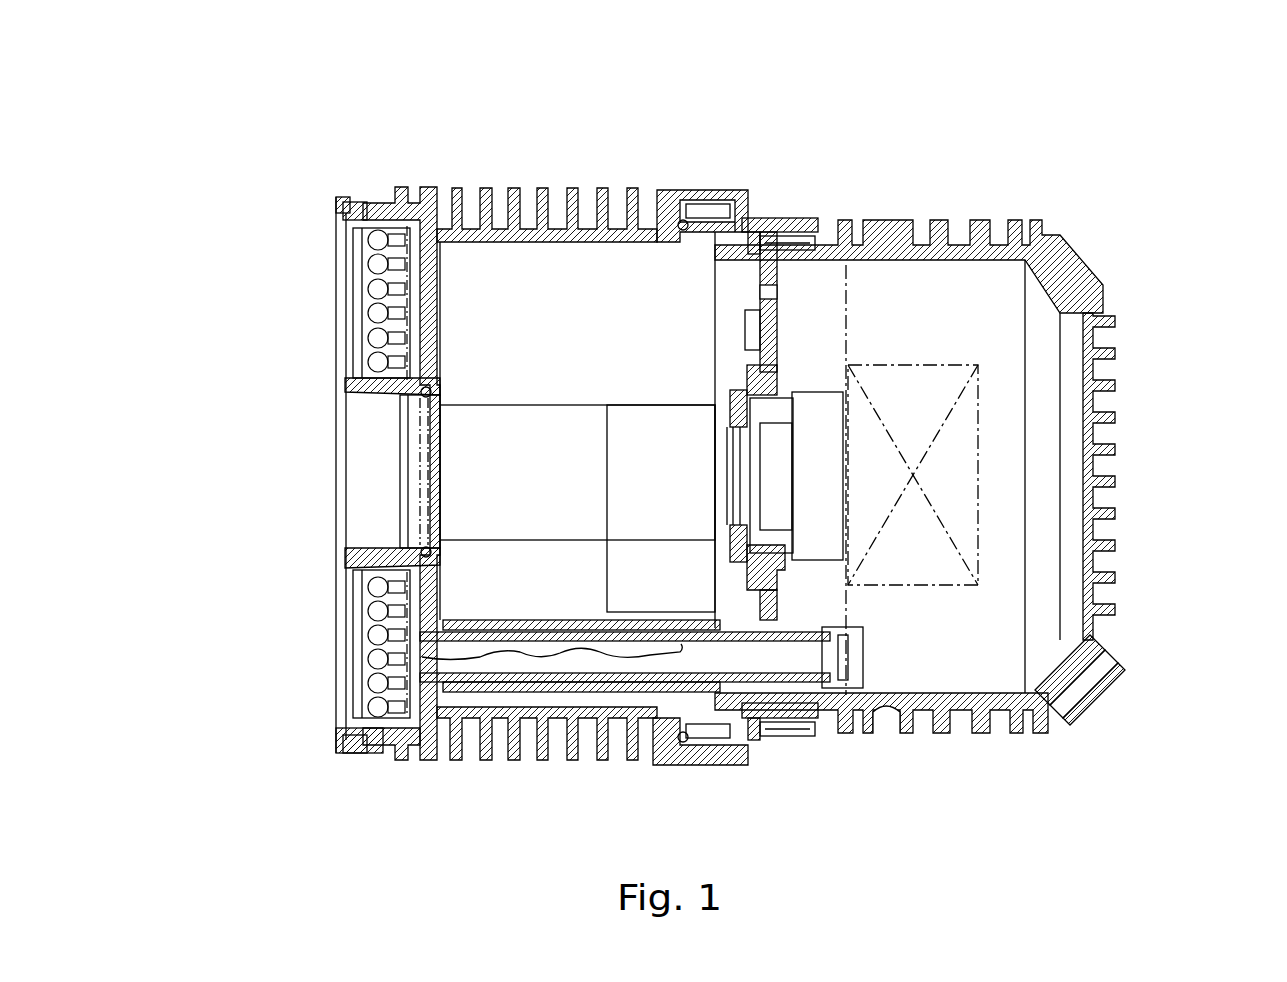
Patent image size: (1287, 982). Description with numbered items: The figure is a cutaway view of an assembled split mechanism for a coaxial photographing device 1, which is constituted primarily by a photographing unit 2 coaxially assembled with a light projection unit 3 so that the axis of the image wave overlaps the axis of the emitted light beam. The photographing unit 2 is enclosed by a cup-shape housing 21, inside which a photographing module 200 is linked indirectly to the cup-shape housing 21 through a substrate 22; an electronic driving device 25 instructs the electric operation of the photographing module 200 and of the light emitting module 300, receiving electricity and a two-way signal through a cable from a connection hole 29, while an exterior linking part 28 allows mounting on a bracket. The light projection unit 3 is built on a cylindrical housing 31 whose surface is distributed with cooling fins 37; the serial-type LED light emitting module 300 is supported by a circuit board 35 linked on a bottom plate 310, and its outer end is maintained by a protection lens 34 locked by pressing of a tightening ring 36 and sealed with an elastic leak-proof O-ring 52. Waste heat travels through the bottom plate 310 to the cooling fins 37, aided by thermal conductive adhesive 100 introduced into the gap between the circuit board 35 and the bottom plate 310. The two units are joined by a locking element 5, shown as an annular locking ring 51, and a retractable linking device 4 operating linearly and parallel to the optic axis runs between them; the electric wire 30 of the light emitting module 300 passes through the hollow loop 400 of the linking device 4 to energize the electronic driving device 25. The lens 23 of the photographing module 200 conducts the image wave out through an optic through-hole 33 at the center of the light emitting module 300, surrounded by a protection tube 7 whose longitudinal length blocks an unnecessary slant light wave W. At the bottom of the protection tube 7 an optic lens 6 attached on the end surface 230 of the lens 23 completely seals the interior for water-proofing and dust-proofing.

The photographing device 1 is at (1185, 265).
The photographing unit 2 is at (973, 457).
The light projection unit 3 is at (500, 386).
The linking device 4 is at (500, 660).
The locking element 5 is at (706, 180).
The optic lens 6 is at (420, 440).
The protection tube 7 is at (385, 393).
The cup-shape housing 21 is at (1132, 420).
The substrate 22 is at (777, 330).
The lens 23 is at (542, 440).
The electronic driving device 25 is at (905, 570).
The linking part 28 is at (886, 738).
The connection hole 29 is at (1093, 690).
The electric wire 30 is at (547, 660).
The cylindrical housing 31 is at (392, 165).
The optic through-hole 33 is at (268, 453).
The protection lens 34 is at (345, 306).
The circuit board 35 is at (430, 230).
The tightening ring 36 is at (338, 214).
The cooling fins 37 is at (548, 140).
The locking ring 51 is at (745, 178).
The O-ring 52 is at (362, 198).
The thermal conductive adhesive 100 is at (400, 690).
The photographing module 200 is at (808, 378).
The end surface 230 is at (436, 495).
The light emitting module 300 is at (372, 283).
The bottom plate 310 is at (455, 600).
The hollow loop 400 is at (632, 660).
The slant light wave W is at (338, 600).